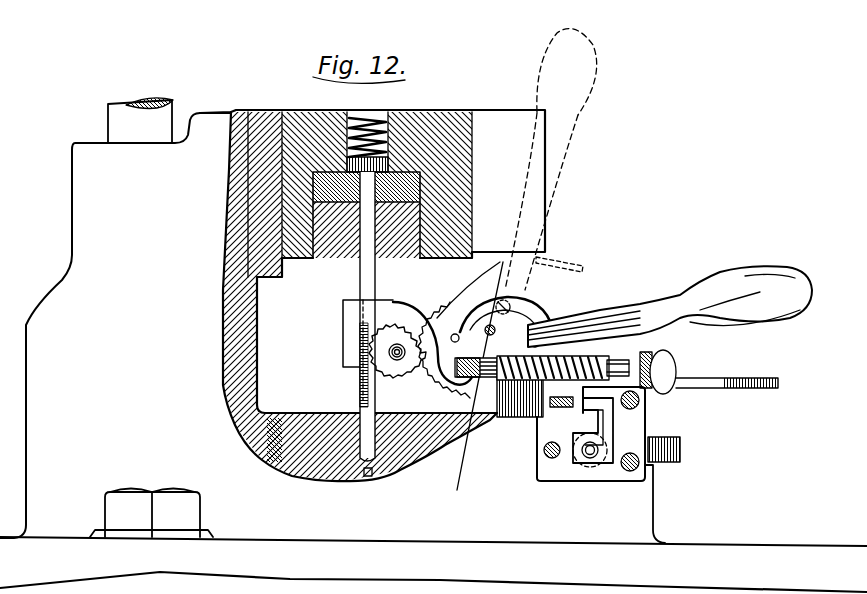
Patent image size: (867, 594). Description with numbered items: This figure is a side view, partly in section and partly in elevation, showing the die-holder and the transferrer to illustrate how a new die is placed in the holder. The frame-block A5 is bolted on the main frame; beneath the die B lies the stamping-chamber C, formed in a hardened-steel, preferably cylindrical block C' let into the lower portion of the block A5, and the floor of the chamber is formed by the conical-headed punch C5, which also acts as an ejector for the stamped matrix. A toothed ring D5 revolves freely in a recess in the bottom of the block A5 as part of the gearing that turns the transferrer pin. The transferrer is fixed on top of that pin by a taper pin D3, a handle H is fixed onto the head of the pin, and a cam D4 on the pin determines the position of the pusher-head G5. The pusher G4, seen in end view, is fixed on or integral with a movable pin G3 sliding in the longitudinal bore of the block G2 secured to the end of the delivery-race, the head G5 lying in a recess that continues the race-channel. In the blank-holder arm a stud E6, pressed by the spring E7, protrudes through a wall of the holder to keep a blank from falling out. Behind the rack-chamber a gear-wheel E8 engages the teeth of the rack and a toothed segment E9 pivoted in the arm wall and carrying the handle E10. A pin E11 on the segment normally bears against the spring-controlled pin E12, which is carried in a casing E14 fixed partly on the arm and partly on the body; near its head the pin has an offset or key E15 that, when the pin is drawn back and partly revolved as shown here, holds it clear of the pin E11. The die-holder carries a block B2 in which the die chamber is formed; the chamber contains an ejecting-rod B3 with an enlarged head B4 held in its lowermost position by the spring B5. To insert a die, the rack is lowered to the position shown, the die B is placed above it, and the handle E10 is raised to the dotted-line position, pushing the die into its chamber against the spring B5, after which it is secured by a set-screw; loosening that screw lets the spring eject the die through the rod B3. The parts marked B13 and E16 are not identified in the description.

The toothed ring D5 is at (147, 203).
The taper pin D3 is at (118, 124).
The cam D4 is at (683, 452).
The die B is at (366, 283).
The block B2 is at (330, 262).
The ejecting-rod B3 is at (400, 262).
The enlarged head B4 is at (392, 155).
The spring B5 is at (372, 117).
The cam disk B13 is at (520, 336).
The stamping-chamber C is at (346, 417).
The hardened-steel block C' is at (308, 415).
The conical-headed punch C5 is at (370, 474).
The stud E6 is at (360, 387).
The spring E7 is at (433, 445).
The gear-wheel E8 is at (420, 313).
The toothed segment E9 is at (466, 312).
The handle E10 is at (568, 119).
The pin E11 is at (528, 318).
The spring-controlled pin E12 is at (474, 386).
The casing E14 is at (517, 418).
The offset or key E15 is at (620, 372).
The lever E16 is at (607, 338).
The block G2 is at (637, 432).
The movable pin G3 is at (593, 470).
The pusher G4 is at (605, 423).
The pusher-head G5 is at (614, 405).
The handle H is at (739, 374).
The block A5 is at (692, 557).